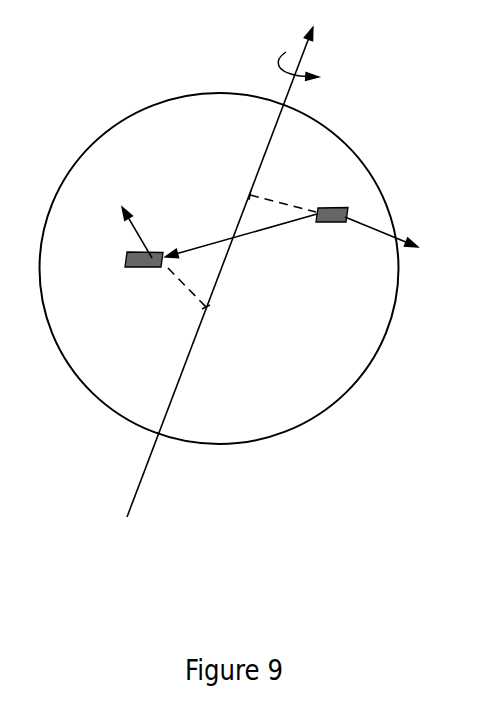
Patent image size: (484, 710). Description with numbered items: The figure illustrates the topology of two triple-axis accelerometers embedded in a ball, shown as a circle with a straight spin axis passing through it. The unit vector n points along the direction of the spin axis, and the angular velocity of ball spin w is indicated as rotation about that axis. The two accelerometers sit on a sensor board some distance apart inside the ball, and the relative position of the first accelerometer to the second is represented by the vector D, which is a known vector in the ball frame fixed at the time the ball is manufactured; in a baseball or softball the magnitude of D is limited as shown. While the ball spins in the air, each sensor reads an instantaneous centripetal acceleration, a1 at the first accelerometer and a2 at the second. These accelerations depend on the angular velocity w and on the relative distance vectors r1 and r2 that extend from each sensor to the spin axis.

The unit vector n is at (339, 34).
The angular velocity of ball spin w is at (341, 72).
The relative position vector D is at (258, 242).
The acceleration a1 is at (414, 212).
The acceleration a2 is at (93, 192).
The relative distance vector r1 is at (286, 176).
The relative distance vector r2 is at (166, 278).